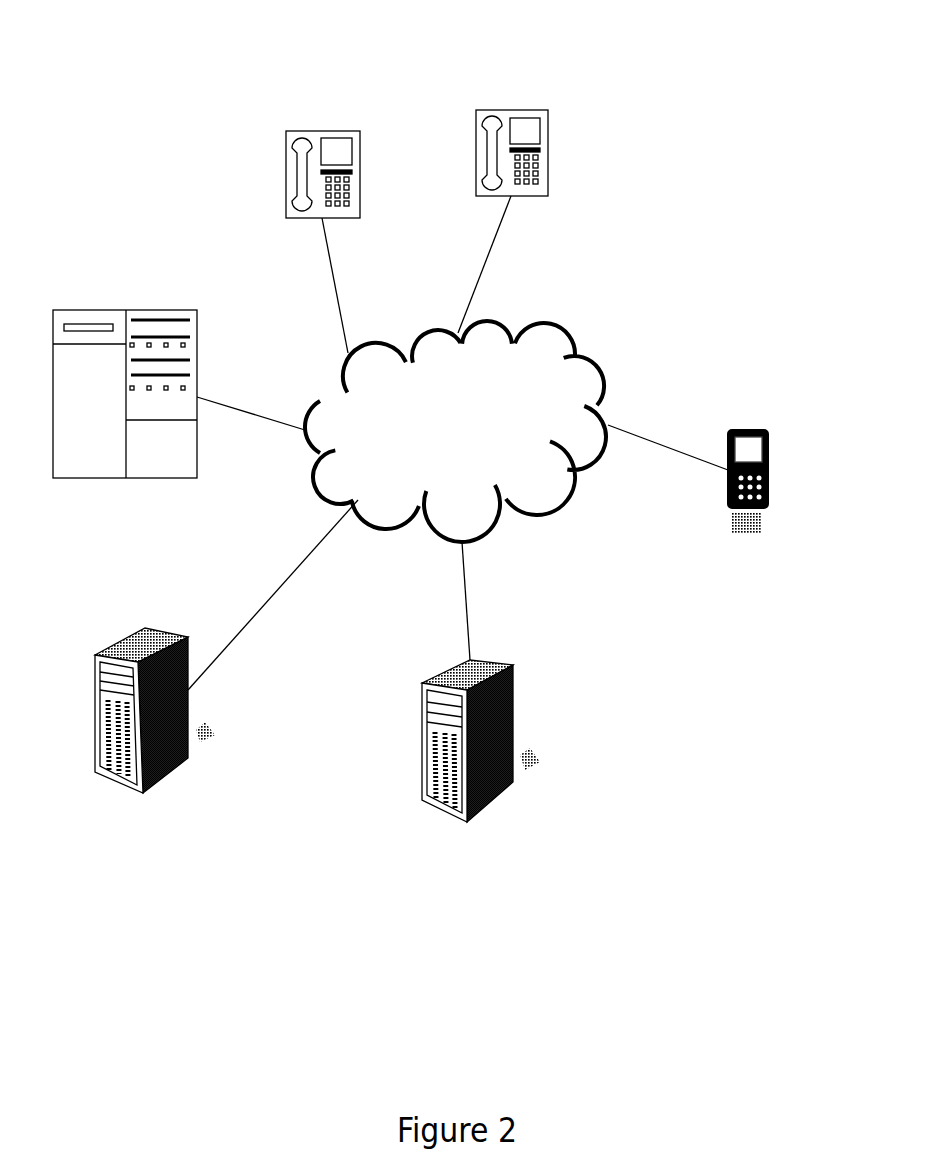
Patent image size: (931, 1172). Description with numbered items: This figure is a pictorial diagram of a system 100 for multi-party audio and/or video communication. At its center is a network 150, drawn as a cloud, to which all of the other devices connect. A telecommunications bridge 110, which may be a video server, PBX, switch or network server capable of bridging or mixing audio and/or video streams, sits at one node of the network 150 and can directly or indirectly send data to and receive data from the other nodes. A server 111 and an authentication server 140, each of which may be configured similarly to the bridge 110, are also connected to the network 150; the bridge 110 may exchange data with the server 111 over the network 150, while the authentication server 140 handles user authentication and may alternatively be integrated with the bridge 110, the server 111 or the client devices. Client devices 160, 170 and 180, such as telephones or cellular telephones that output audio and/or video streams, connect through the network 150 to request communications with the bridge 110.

The system 100 is at (706, 52).
The telecommunications bridge 110 is at (137, 303).
The server 111 is at (100, 770).
The authentication server 140 is at (425, 740).
The network 150 is at (558, 505).
The client device 160 is at (768, 487).
The client device 170 is at (548, 173).
The client device 180 is at (360, 193).